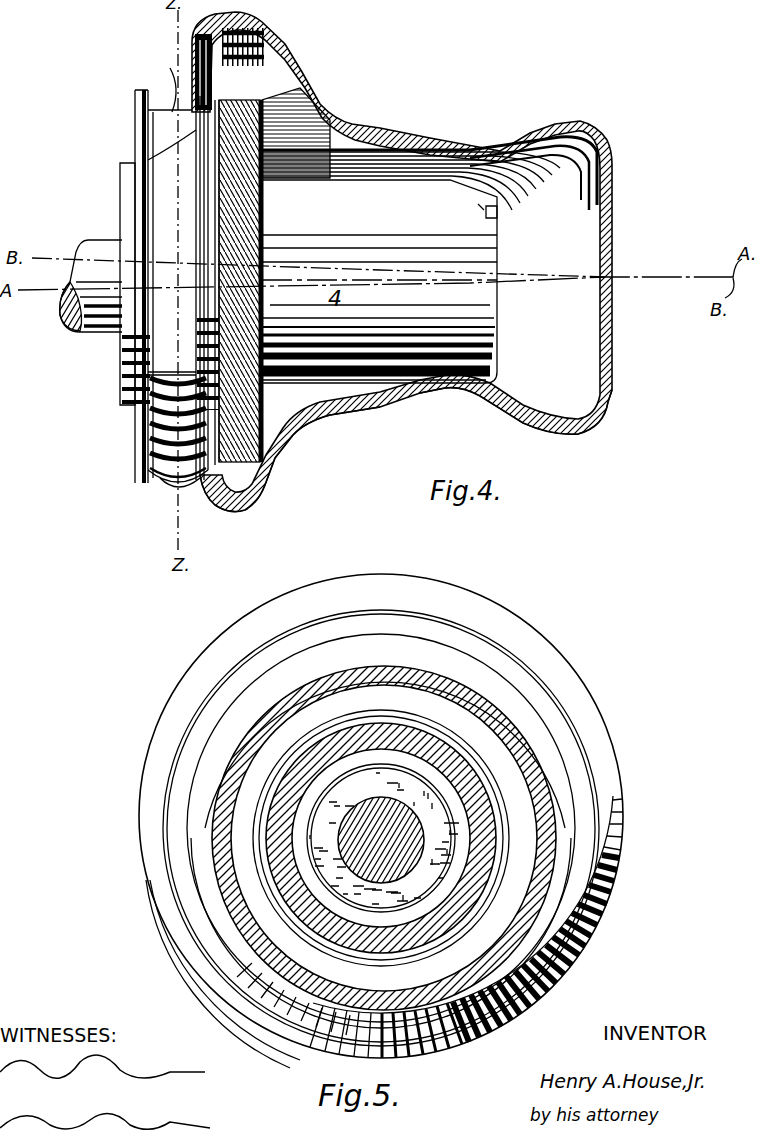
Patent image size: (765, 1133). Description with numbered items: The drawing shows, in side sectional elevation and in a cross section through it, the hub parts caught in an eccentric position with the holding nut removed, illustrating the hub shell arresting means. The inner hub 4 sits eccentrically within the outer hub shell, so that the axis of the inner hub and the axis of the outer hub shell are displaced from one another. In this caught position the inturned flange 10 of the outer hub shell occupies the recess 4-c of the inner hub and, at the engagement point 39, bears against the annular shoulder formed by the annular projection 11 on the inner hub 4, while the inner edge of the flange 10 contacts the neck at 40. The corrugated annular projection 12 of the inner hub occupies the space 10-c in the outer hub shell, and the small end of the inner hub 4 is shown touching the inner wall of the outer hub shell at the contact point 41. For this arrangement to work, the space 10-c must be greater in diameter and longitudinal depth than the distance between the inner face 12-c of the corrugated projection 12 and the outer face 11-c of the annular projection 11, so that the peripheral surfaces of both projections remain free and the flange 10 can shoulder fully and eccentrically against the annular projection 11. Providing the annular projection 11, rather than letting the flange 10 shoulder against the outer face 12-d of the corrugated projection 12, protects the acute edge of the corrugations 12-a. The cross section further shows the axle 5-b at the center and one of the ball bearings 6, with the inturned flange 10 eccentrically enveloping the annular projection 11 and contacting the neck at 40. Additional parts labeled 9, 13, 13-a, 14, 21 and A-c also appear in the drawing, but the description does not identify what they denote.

In FIG. 4, the inner hub 4 is at (380, 300).
In FIG. 5, the inner hub 4 is at (278, 915).
In FIG. 4, the recess 4-c is at (146, 490).
In FIG. 5, the recess 4-c is at (295, 990).
In FIG. 4, the axle 5-b is at (82, 334).
In FIG. 5, the axle 5-b is at (343, 833).
In FIG. 5, the ball bearing 6 is at (316, 873).
In FIG. 4, the bolt flange 9 is at (180, 462).
In FIG. 4, the inturned flange 10 is at (195, 42).
In FIG. 5, the inturned flange 10 is at (381, 816).
In FIG. 4, the space 10-c is at (248, 476).
In FIG. 4, the annular projection 11 is at (208, 485).
In FIG. 5, the annular projection 11 is at (428, 668).
In FIG. 4, the outer face of the annular projection 11-c is at (196, 131).
In FIG. 4, the corrugated annular projection 12 is at (233, 463).
In FIG. 4, the corrugations 12-a is at (233, 281).
In FIG. 4, the inner face of the corrugated projection 12-c is at (262, 232).
In FIG. 4, the outer face of the corrugated projection 12-d is at (216, 170).
In FIG. 4, the magnet core 13 is at (287, 417).
In FIG. 4, the field winding 13-a is at (292, 145).
In FIG. 4, the casing wall 14 is at (515, 398).
In FIG. 4, the retaining notch 21 is at (490, 218).
In FIG. 4, the shoulder engagement point 39 is at (183, 455).
In FIG. 4, the neck 40 is at (181, 452).
In FIG. 5, the neck 40 is at (335, 1050).
In FIG. 4, the contact point 41 is at (446, 390).
In FIG. 4, the section plane A-c is at (153, 87).